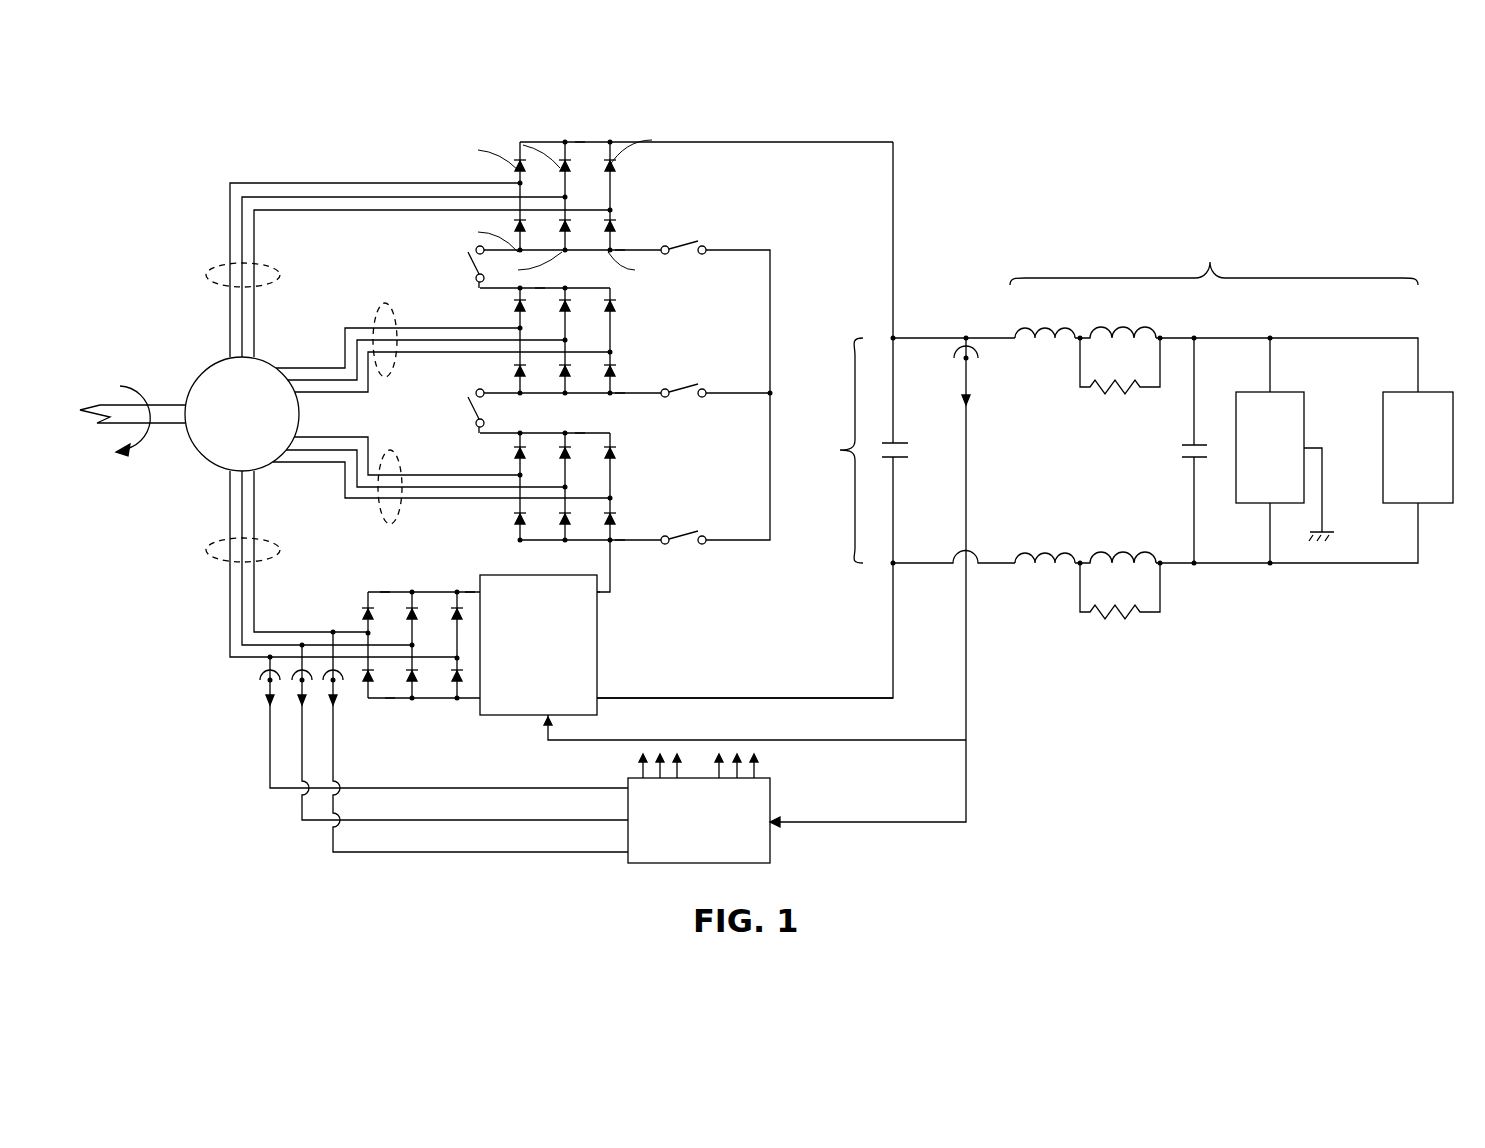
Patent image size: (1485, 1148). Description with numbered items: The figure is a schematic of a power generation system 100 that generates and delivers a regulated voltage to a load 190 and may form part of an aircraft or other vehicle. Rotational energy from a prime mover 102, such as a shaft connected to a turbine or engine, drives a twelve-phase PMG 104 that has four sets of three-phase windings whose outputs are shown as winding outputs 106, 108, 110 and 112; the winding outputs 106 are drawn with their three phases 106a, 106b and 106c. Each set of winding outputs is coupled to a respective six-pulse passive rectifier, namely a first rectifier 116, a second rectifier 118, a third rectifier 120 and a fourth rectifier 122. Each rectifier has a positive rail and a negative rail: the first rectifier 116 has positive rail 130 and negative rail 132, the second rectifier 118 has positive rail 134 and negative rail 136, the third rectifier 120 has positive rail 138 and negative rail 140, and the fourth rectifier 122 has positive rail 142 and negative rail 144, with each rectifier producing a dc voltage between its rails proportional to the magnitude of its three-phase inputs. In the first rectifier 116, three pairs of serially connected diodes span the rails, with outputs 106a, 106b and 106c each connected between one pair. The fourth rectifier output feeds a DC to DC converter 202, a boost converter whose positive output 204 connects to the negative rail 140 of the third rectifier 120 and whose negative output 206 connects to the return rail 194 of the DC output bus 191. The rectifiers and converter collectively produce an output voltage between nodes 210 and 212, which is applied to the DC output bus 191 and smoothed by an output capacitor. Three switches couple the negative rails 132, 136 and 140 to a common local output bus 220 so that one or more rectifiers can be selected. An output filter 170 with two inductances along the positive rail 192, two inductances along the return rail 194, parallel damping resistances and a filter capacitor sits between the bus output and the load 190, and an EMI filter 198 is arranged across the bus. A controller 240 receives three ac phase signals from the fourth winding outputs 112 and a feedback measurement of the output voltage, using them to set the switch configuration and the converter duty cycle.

The power generation system 100 is at (937, 200).
The prime mover 102 is at (150, 400).
The 12-phase PMG 104 is at (213, 368).
The winding outputs 106 is at (372, 267).
The phase output 106a is at (228, 240).
The phase output 106b is at (228, 208).
The phase output 106c is at (256, 245).
The winding outputs 108 is at (372, 328).
The winding outputs 110 is at (380, 505).
The winding outputs 112 is at (213, 550).
The first rectifier 116 is at (628, 188).
The second rectifier 118 is at (653, 334).
The third rectifier 120 is at (653, 476).
The fourth rectifier 122 is at (357, 620).
The positive rail 130 is at (580, 142).
The negative rail 132 is at (620, 250).
The positive rail 134 is at (540, 288).
The negative rail 136 is at (620, 393).
The positive rail 138 is at (580, 433).
The negative rail 140 is at (620, 540).
The positive rail 142 is at (385, 592).
The negative rail 144 is at (392, 698).
The output filter 170 is at (1210, 425).
The load 190 is at (1405, 392).
The DC output bus 191 is at (870, 449).
The positive rail 192 is at (905, 338).
The return rail 194 is at (975, 568).
The EMI filter 198 is at (1258, 392).
The DC to DC converter 202 is at (686, 645).
The positive output 204 is at (600, 600).
The negative output 206 is at (735, 698).
The node 210 is at (890, 338).
The node 212 is at (888, 563).
The common local output bus 220 is at (783, 272).
The controller 240 is at (770, 850).